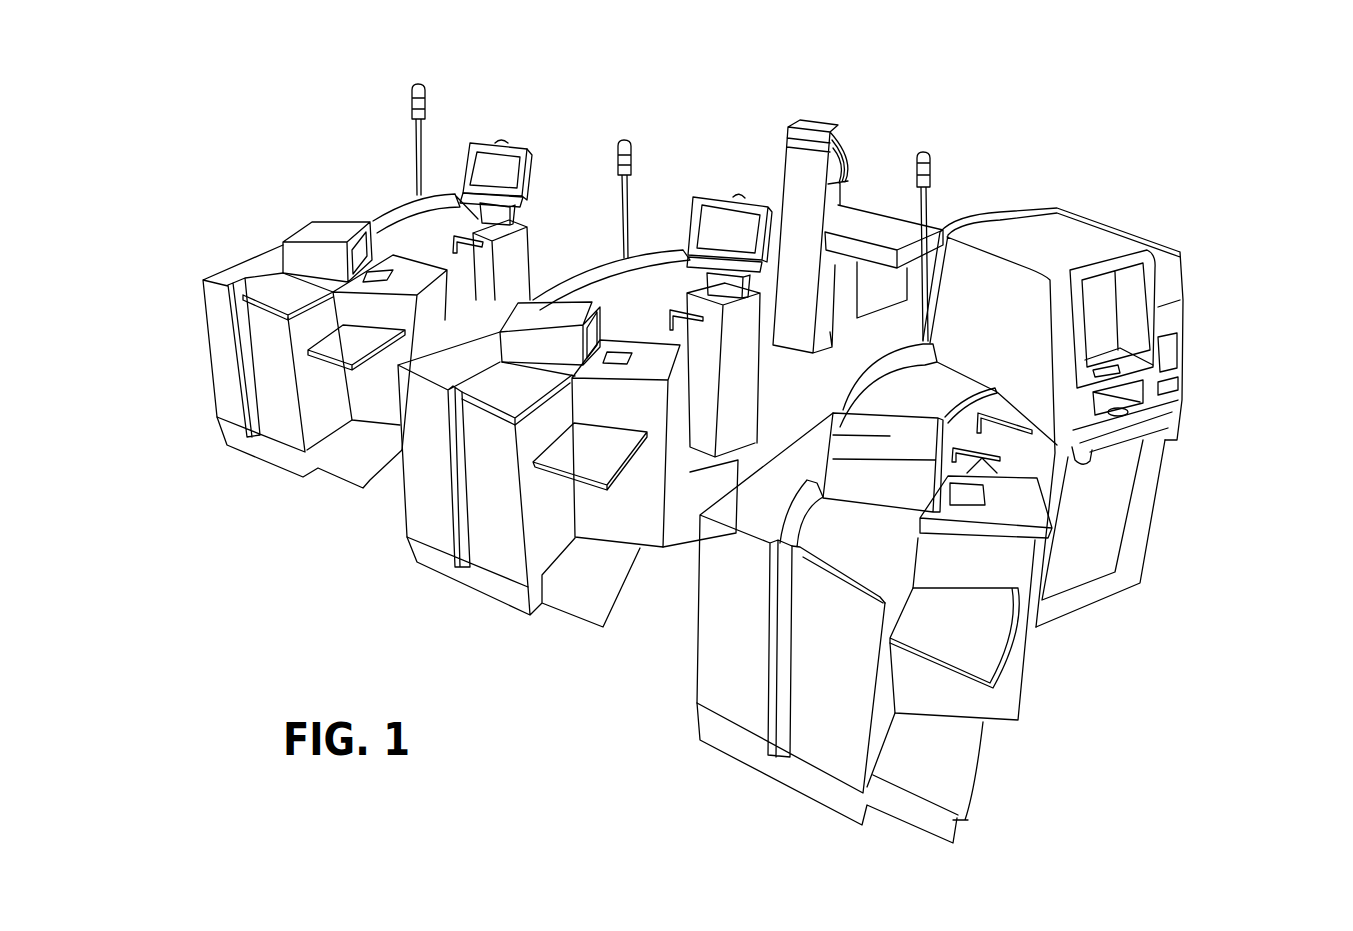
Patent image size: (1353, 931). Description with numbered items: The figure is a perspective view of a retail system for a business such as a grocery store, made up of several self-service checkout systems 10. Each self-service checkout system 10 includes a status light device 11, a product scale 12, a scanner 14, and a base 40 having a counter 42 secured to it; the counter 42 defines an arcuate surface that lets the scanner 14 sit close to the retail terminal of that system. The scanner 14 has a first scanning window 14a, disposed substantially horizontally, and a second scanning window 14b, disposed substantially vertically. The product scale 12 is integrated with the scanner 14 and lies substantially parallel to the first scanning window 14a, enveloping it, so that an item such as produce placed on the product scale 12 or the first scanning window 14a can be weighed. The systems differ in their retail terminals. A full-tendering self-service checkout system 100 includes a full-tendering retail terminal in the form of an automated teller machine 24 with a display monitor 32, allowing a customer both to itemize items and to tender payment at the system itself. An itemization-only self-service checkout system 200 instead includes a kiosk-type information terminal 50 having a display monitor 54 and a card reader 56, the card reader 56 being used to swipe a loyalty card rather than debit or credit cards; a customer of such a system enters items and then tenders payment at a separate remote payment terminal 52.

The self-service checkout system 10 is at (525, 138).
The status light device 11 is at (413, 86).
The product scale 12 is at (410, 283).
The scanner 14 is at (606, 350).
The first scanning window 14a is at (373, 275).
The second scanning window 14b is at (360, 247).
The automated teller machine (ATM) 24 is at (1170, 318).
The display monitor 32 is at (1098, 300).
The base 40 is at (222, 372).
The counter 42 is at (277, 295).
The kiosk-type information terminal 50 is at (602, 188).
The remote payment terminal 52 is at (845, 116).
The display monitor 54 is at (460, 163).
The card reader 56 is at (531, 167).
The full-tendering self-service checkout system 100 is at (1119, 411).
The itemization-only self-service checkout system 200 is at (530, 211).